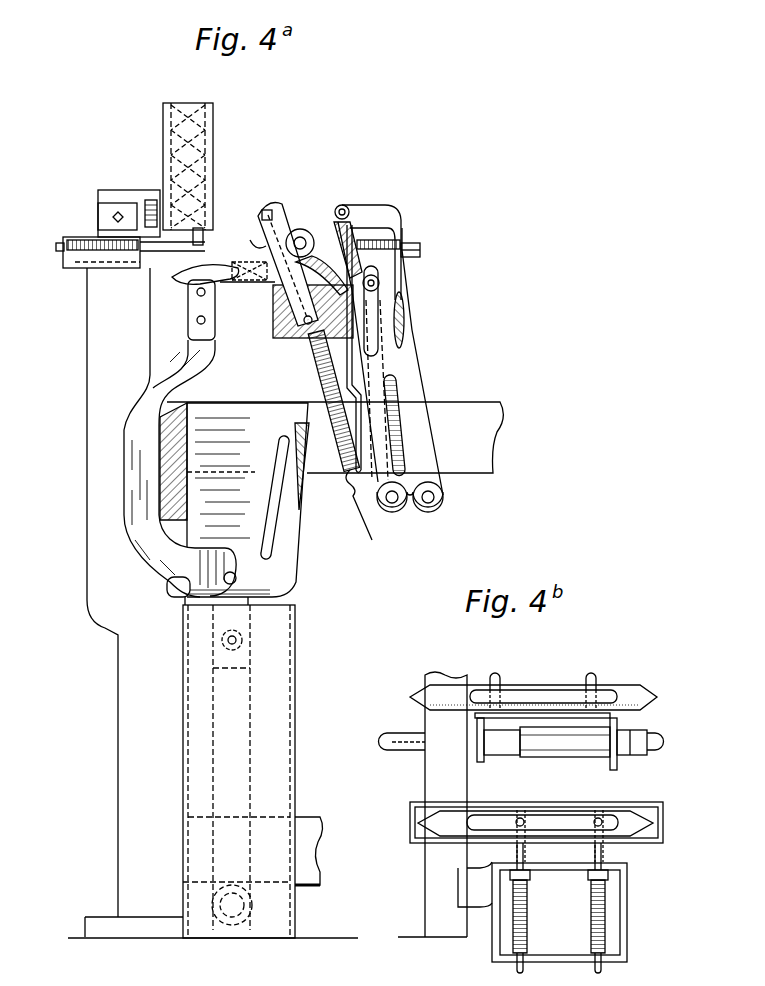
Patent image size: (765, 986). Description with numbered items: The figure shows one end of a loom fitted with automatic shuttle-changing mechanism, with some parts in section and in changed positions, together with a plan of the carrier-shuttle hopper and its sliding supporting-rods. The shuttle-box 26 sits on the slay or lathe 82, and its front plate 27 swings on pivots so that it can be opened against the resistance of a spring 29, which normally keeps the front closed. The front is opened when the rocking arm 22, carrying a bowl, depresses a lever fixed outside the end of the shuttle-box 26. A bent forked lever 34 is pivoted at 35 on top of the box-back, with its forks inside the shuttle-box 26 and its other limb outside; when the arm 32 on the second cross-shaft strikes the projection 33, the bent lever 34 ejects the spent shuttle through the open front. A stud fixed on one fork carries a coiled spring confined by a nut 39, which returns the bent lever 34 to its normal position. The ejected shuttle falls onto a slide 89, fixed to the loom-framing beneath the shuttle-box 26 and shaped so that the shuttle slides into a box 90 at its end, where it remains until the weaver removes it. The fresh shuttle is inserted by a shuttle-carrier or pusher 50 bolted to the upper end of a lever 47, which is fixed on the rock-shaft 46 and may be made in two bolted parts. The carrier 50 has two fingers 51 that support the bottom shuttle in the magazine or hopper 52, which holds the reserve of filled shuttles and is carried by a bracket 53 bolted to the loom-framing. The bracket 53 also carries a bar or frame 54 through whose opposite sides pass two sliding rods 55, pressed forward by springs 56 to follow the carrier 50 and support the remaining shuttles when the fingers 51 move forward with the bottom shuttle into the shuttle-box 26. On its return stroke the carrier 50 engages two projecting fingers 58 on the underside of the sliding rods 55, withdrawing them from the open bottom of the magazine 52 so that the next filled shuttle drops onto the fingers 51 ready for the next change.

In FIG. 4A, the arm 22 is at (416, 441).
In FIG. 4A, the shuttle-box 26 is at (320, 232).
In FIG. 4A, the front plate 27 is at (262, 247).
In FIG. 4A, the spring 29 is at (312, 379).
In FIG. 4A, the arm 32 is at (390, 437).
In FIG. 4A, the projection 33 is at (405, 306).
In FIG. 4A, the bent forked lever 34 is at (396, 222).
In FIG. 4A, the pivot 35 is at (347, 208).
In FIG. 4A, the nut 39 is at (423, 251).
In FIG. 4A, the rock-shaft 46 is at (231, 908).
In FIG. 4B, the rock-shaft 46 is at (485, 741).
In FIG. 4A, the lever 47 is at (146, 537).
In FIG. 4B, the lever 47 is at (619, 766).
In FIG. 4A, the shuttle-carrier or pusher 50 is at (195, 307).
In FIG. 4B, the shuttle-carrier or pusher 50 is at (626, 718).
In FIG. 4A, the fingers 51 is at (259, 284).
In FIG. 4B, the fingers 51 is at (498, 686).
In FIG. 4A, the magazine or hopper 52 is at (195, 148).
In FIG. 4B, the magazine or hopper 52 is at (660, 827).
In FIG. 4A, the bracket 53 is at (118, 196).
In FIG. 4B, the bracket 53 is at (460, 880).
In FIG. 4A, the bar or frame 54 is at (82, 264).
In FIG. 4B, the bar or frame 54 is at (629, 920).
In FIG. 4A, the sliding rods 55 is at (57, 250).
In FIG. 4B, the sliding rods 55 is at (593, 968).
In FIG. 4A, the springs 56 is at (76, 238).
In FIG. 4B, the springs 56 is at (590, 905).
In FIG. 4A, the projecting fingers 58 is at (193, 270).
In FIG. 4B, the projecting fingers 58 is at (522, 820).
In FIG. 4A, the slay or lathe 82 is at (286, 335).
In FIG. 4A, the slide 89 is at (226, 440).
In FIG. 4A, the box 90 is at (275, 716).